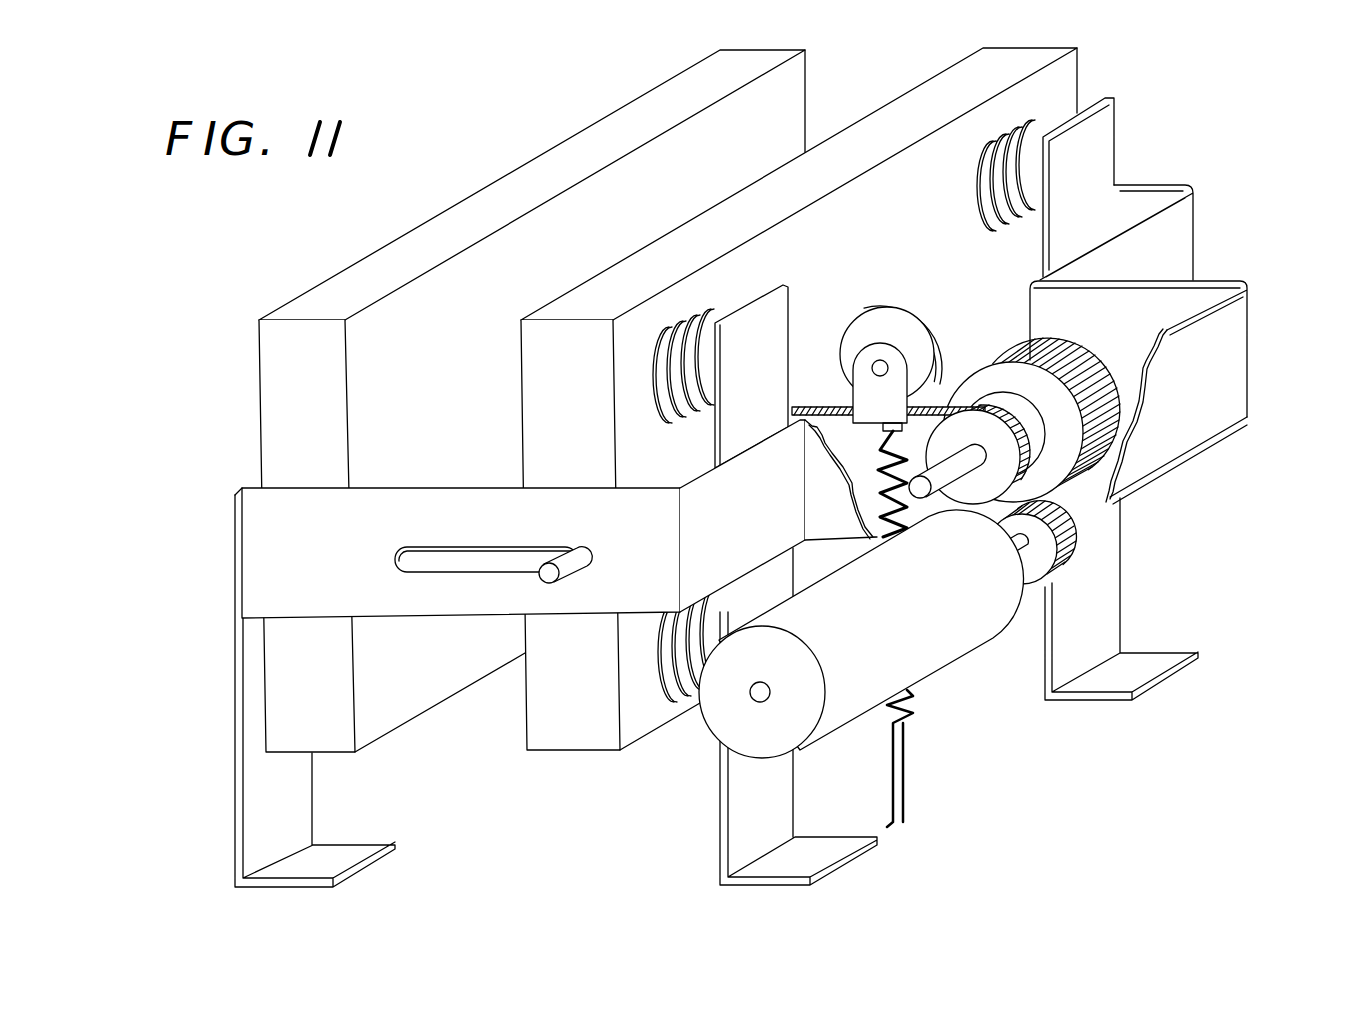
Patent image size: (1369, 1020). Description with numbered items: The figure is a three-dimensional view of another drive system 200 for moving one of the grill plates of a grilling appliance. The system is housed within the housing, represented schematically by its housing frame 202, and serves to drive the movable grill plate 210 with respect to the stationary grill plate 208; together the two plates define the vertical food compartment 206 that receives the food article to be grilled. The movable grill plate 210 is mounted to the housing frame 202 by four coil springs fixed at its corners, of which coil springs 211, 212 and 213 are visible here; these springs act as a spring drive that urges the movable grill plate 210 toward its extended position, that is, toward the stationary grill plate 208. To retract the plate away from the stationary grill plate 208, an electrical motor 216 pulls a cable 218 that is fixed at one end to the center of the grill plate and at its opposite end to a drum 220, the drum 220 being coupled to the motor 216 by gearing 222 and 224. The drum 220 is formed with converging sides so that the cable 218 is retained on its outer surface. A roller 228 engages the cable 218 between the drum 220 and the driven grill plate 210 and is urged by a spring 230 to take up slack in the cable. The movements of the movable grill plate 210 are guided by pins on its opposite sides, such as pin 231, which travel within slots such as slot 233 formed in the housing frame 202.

The drive system 200 is at (1320, 227).
The housing frame 202 is at (1248, 358).
The vertical food compartment 206 is at (895, 63).
The stationary grill plate 208 is at (603, 128).
The movable grill plate 210 is at (962, 75).
The coil spring 211 is at (692, 312).
The coil spring 212 is at (1040, 125).
The coil spring 213 is at (678, 697).
The electrical motor 216 is at (933, 658).
The cable 218 is at (822, 408).
The drum 220 is at (1007, 473).
The gearing 222 is at (1040, 563).
The gearing 224 is at (1113, 448).
The roller 228 is at (928, 318).
The spring 230 is at (927, 520).
The pin 231 is at (580, 563).
The slot 233 is at (452, 553).